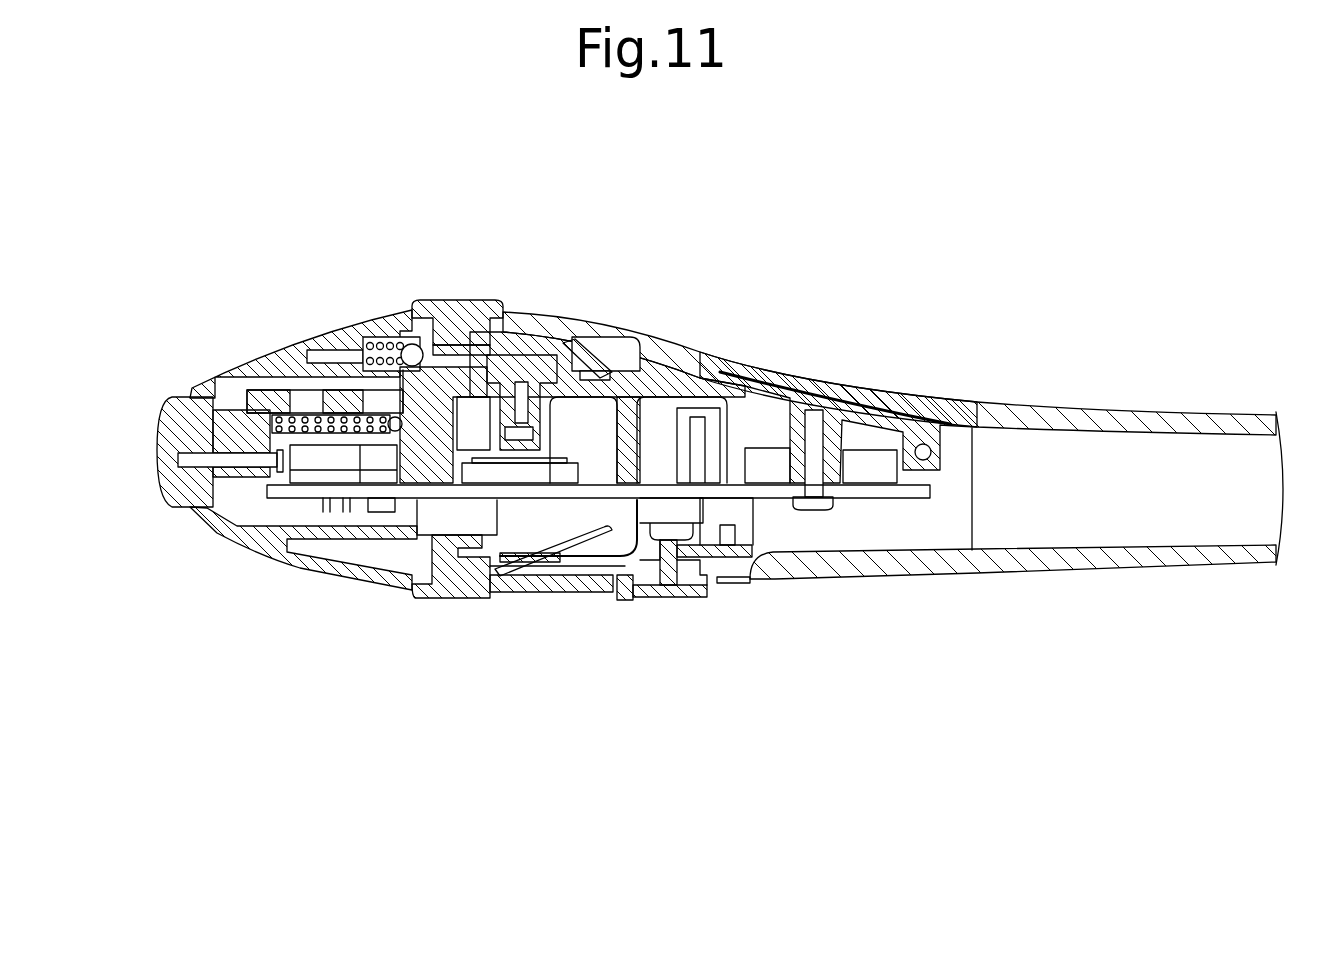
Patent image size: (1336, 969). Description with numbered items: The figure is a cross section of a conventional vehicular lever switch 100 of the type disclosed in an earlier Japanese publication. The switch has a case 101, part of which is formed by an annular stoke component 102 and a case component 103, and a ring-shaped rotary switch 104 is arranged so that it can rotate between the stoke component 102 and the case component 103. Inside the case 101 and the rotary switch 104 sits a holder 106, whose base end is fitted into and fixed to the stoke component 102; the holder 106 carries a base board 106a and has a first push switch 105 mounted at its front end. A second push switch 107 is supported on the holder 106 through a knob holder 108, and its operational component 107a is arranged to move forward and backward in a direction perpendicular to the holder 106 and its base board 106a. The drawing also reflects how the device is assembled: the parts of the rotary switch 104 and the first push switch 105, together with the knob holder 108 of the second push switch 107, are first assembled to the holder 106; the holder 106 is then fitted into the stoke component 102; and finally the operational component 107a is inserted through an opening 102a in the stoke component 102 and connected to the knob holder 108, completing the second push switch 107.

The vehicular lever switch 100 is at (806, 290).
The case 101 is at (572, 213).
The stoke component 102 is at (543, 322).
The opening 102a is at (619, 601).
The case component 103 is at (355, 323).
The rotary switch 104 is at (462, 600).
The first push switch 105 is at (164, 520).
The holder 106 is at (660, 372).
The base board 106a is at (869, 493).
The second push switch 107 is at (694, 606).
The operational component 107a is at (657, 599).
The knob holder 108 is at (747, 585).